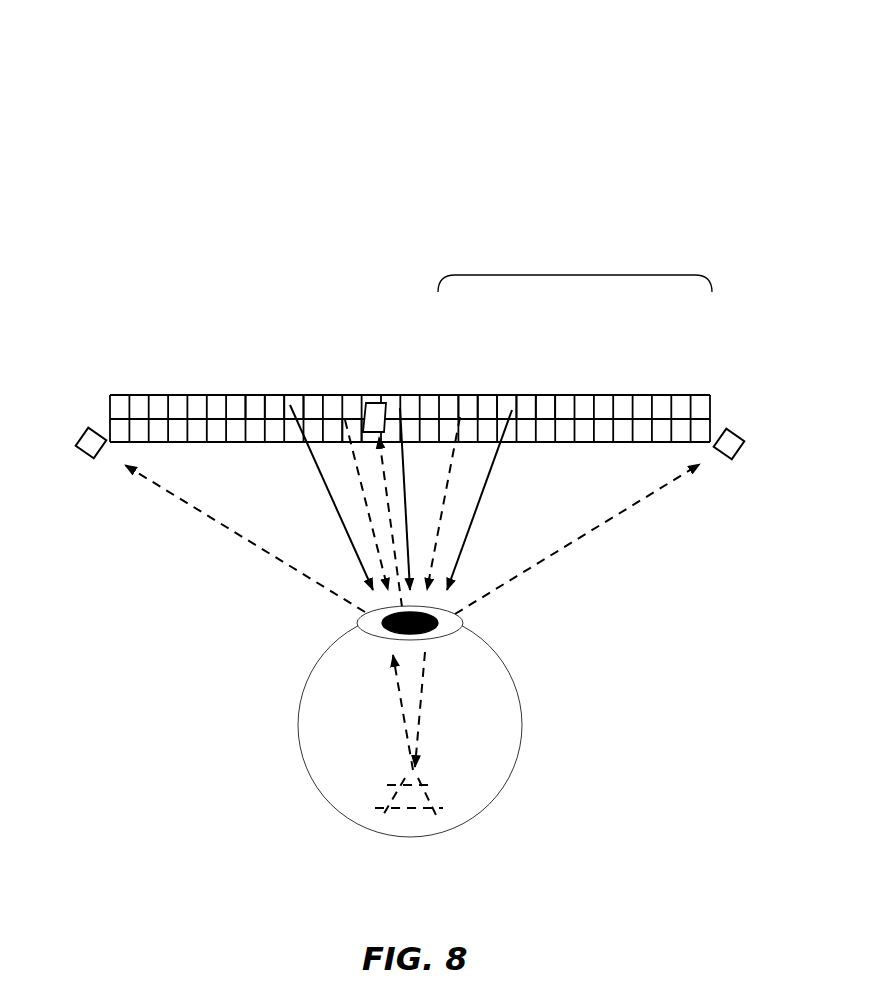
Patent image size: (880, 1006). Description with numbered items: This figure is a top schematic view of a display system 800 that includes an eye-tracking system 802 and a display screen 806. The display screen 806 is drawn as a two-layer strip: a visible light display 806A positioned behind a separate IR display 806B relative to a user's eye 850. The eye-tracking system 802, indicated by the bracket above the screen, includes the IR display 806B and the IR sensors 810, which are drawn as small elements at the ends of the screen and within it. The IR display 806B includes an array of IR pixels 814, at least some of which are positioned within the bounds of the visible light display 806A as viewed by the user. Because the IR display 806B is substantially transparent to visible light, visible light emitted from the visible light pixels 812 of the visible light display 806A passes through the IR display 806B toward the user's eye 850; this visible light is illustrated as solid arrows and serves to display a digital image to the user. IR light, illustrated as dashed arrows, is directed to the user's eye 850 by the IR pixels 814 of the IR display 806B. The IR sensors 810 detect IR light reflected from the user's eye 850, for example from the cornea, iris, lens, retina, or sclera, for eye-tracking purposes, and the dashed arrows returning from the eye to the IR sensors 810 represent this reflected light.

The display system 800 is at (125, 113).
The eye-tracking system 802 is at (575, 275).
The display screen 806 is at (230, 313).
The visible light display 806A is at (205, 372).
The IR display 806B is at (215, 448).
The IR sensors 810 is at (86, 427).
The visible light pixels 812 is at (287, 397).
The IR pixels 814 is at (345, 420).
The user's eye 850 is at (247, 695).